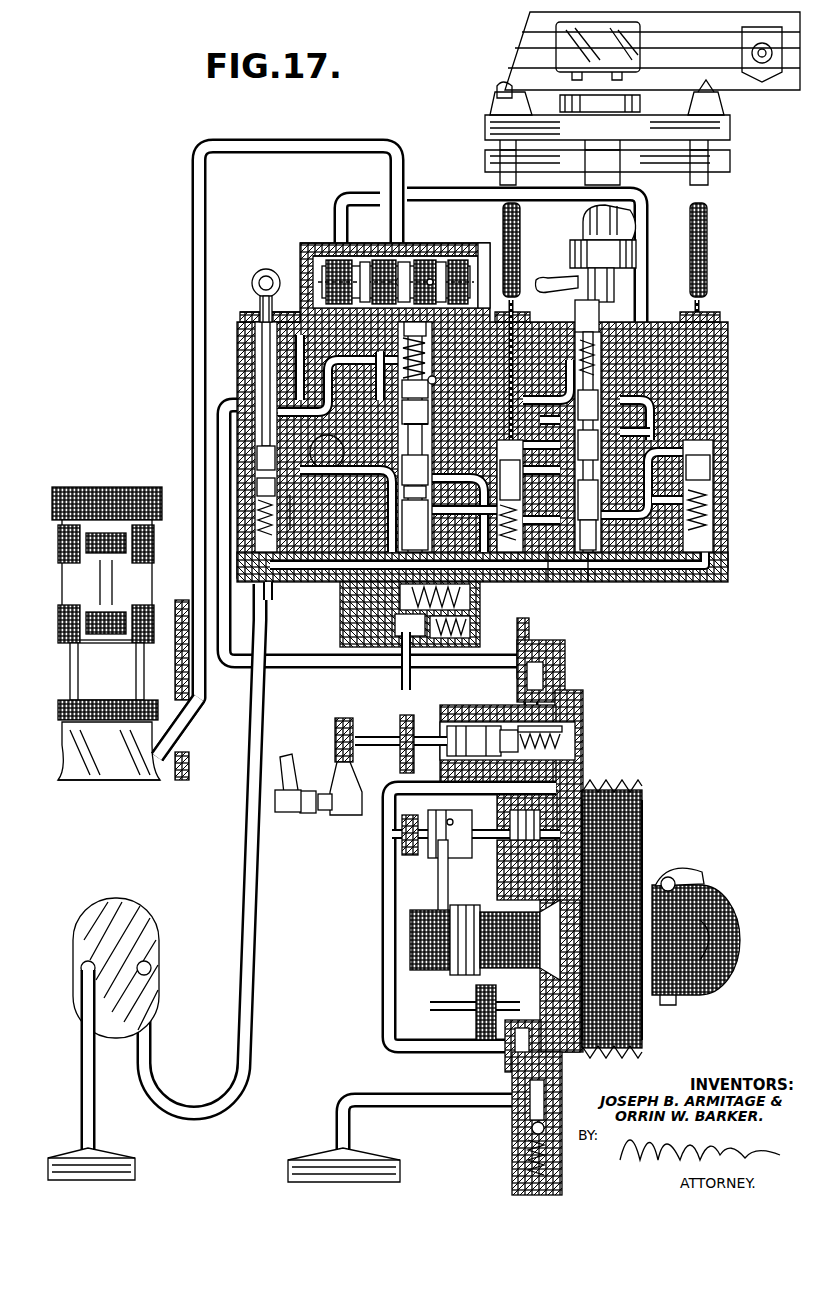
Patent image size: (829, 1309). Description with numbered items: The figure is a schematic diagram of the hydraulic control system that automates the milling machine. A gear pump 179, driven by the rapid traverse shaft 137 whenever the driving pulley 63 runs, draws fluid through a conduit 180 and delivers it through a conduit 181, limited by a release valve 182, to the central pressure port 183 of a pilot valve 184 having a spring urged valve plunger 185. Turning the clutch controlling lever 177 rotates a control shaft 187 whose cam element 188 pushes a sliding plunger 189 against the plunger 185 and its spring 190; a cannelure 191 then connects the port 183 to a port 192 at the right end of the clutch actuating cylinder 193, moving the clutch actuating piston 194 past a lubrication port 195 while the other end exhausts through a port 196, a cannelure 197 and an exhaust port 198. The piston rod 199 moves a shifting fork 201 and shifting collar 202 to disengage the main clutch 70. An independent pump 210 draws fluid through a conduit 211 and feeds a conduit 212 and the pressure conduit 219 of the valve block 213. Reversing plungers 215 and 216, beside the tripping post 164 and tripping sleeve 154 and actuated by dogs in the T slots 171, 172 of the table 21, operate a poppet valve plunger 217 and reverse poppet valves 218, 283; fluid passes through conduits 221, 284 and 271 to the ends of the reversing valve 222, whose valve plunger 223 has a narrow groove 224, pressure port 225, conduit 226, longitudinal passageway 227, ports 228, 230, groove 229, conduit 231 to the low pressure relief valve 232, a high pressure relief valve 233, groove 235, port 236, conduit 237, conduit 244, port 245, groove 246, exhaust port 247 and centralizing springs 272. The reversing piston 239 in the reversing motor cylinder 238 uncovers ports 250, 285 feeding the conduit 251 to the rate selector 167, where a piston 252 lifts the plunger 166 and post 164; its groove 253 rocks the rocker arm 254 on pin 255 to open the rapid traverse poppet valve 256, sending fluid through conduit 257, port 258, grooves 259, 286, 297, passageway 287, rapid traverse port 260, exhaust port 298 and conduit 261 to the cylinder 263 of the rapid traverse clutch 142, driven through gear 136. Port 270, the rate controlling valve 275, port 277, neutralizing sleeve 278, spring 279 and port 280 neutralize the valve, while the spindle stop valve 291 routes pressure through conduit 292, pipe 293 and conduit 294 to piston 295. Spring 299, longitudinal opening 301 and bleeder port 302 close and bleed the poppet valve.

The work supporting table 21 is at (736, 86).
The main driving pulley 63 is at (640, 1022).
The main driving clutch 70 is at (682, 882).
The gear 136 is at (476, 1028).
The rapid traverse shaft 137 is at (420, 1008).
The rapid traverse friction clutch 142 is at (105, 630).
The tripping sleeve 154 is at (590, 256).
The tripping post 164 is at (598, 150).
The plunger 166 is at (600, 304).
The rate selector 167 is at (590, 540).
The T slot 171 is at (540, 24).
The T slot 172 is at (560, 62).
The clutch controlling lever 177 is at (292, 764).
The gear pump 179 is at (506, 1062).
The conduit 180 is at (434, 1108).
The pressure conduit 181 is at (380, 966).
The release valve 182 is at (566, 1102).
The central pressure port 183 is at (562, 766).
The pilot valve 184 is at (458, 758).
The valve plunger 185 is at (570, 730).
The control shaft 187 is at (316, 810).
The cam element 188 is at (352, 735).
The sliding plunger 189 is at (378, 740).
The spring 190 is at (572, 742).
The cannelure 191 is at (580, 698).
The port 192 is at (598, 790).
The clutch actuating cylinder 193 is at (550, 856).
The clutch actuating piston 194 is at (502, 852).
The port 195 is at (540, 824).
The port 196 is at (480, 806).
The cannelure 197 is at (550, 704).
The exhaust port 198 is at (510, 730).
The piston rod 199 is at (396, 838).
The shifting fork 201 is at (450, 852).
The shifting collar 202 is at (460, 910).
The independent pump 210 is at (115, 898).
The conduit 211 is at (84, 1088).
The conduit 212 is at (241, 896).
The valve block 213 is at (238, 333).
The automatic reversing plunger 215 is at (503, 88).
The automatic reversing plunger 216 is at (746, 90).
The poppet valve plunger 217 is at (515, 445).
The reverse poppet valve 218 is at (432, 448).
The pressure conduit 219 is at (672, 570).
The conduit 221 is at (541, 587).
The reversing valve 222 is at (545, 552).
The valve plunger 223 is at (380, 530).
The narrow groove 224 is at (439, 412).
The pressure port 225 is at (340, 392).
The conduit 226 is at (352, 590).
The longitudinal passageway 227 is at (335, 440).
The port 228 is at (380, 474).
The groove 229 is at (440, 482).
The port 230 is at (310, 582).
The conduit 231 is at (395, 620).
The low pressure relief valve 232 is at (400, 636).
The high pressure relief valve 233 is at (380, 606).
The groove 235 is at (430, 425).
The port 236 is at (432, 462).
The conduit 237 is at (520, 368).
The reversing motor cylinder 238 is at (310, 280).
The reversing piston 239 is at (326, 256).
The conduit 244 is at (299, 366).
The port 245 is at (378, 356).
The groove 246 is at (432, 388).
The exhaust port 247 is at (436, 372).
The port 250 is at (452, 208).
The conduit 251 is at (420, 192).
The piston 252 is at (588, 545).
The groove 253 is at (602, 285).
The rocker arm 254 is at (272, 272).
The pin 255 is at (258, 280).
The rapid traverse poppet valve 256 is at (262, 380).
The conduit 257 is at (264, 372).
The port 258 is at (398, 340).
The groove 259 is at (395, 228).
The rapid traverse port 260 is at (440, 255).
The conduit 261 is at (269, 152).
The cylinder 263 is at (135, 592).
The port 270 is at (605, 530).
The conduit 271 is at (640, 372).
The centralizing springs 272 is at (496, 262).
The rate controlling valve 275 is at (712, 425).
The port 277 is at (625, 535).
The sliding neutralizing sleeve 278 is at (566, 396).
The spring 279 is at (562, 395).
The port 280 is at (556, 448).
The reversing poppet valve 283 is at (714, 486).
The conduit 284 is at (700, 413).
The port 285 is at (336, 244).
The groove 286 is at (368, 258).
The longitudinal passageway 287 is at (396, 282).
The spindle stop valve 291 is at (299, 505).
The conduit 292 is at (236, 405).
The pipe 293 is at (360, 664).
The conduit 294 is at (548, 654).
The piston 295 is at (470, 722).
The third groove 297 is at (432, 280).
The exhaust port 298 is at (424, 242).
The spring 299 is at (238, 524).
The longitudinal opening 301 is at (236, 320).
The bleeder port 302 is at (260, 306).